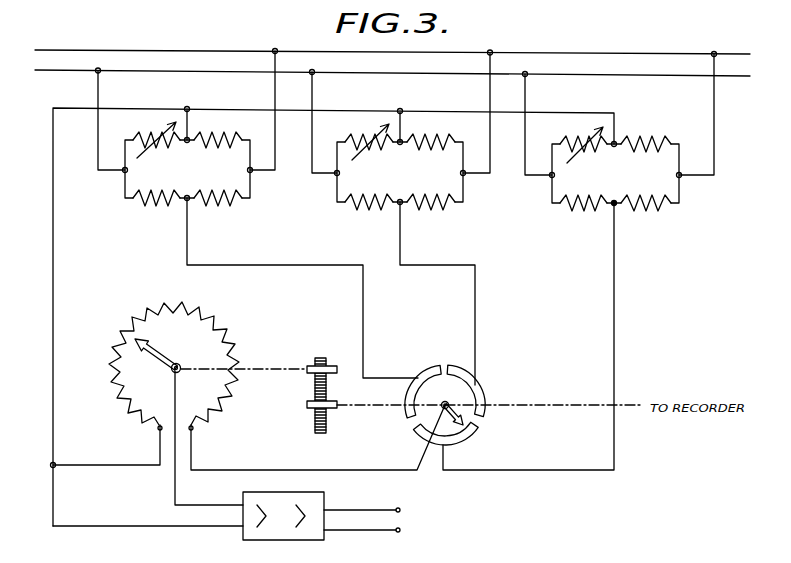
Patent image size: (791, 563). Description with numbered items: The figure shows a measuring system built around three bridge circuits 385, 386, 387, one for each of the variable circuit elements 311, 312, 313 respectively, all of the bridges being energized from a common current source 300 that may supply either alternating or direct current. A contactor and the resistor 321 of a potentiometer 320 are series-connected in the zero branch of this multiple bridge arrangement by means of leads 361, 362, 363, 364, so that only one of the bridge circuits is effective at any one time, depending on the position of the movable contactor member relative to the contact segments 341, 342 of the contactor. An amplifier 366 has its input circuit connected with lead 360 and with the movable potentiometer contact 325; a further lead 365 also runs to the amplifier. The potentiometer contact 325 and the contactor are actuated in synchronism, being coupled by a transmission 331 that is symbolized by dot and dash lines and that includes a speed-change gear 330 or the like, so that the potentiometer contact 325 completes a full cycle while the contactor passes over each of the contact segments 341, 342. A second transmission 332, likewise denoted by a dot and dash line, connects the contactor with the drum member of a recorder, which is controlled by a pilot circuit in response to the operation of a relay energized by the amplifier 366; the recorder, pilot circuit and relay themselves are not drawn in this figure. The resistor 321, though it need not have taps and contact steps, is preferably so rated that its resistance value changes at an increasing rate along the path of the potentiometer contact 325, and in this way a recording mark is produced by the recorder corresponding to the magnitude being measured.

The common current source 300 is at (163, 70).
The variable circuit element 311 is at (152, 138).
The variable circuit element 312 is at (362, 140).
The variable circuit element 313 is at (576, 142).
The potentiometer 320 is at (181, 351).
The resistor of potentiometer 321 is at (205, 316).
The movable potentiometer contact 325 is at (143, 334).
The speed-change gear 330 is at (320, 357).
The transmission 331 is at (253, 366).
The transmission 332 is at (544, 404).
The contact segment 341 is at (424, 376).
The contact segment 342 is at (478, 376).
The lead 360 is at (352, 110).
The lead 361 is at (190, 236).
The lead 362 is at (403, 233).
The lead 363 is at (617, 252).
The lead 364 is at (254, 470).
The conductor 365 is at (175, 488).
The amplifier 366 is at (322, 493).
The bridge circuit 385 is at (200, 173).
The bridge circuit 386 is at (413, 175).
The bridge circuit 387 is at (627, 179).